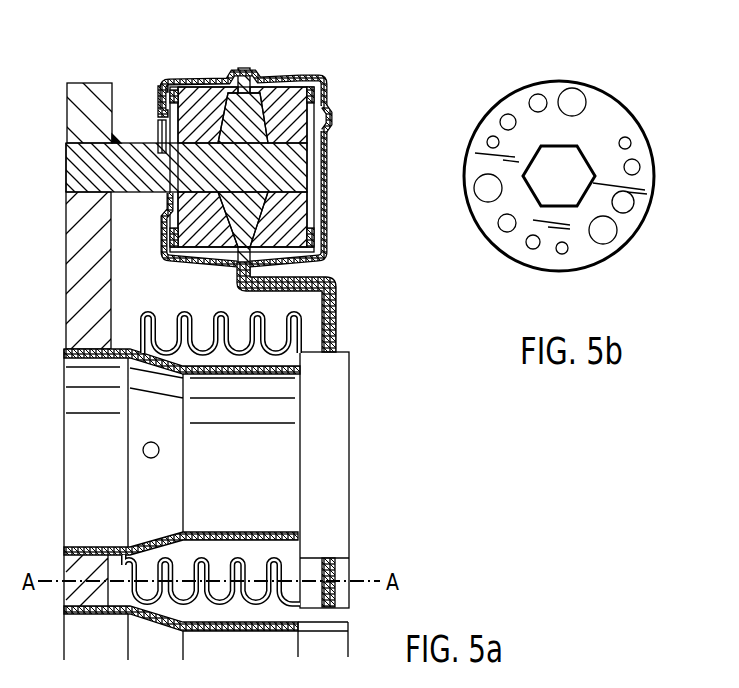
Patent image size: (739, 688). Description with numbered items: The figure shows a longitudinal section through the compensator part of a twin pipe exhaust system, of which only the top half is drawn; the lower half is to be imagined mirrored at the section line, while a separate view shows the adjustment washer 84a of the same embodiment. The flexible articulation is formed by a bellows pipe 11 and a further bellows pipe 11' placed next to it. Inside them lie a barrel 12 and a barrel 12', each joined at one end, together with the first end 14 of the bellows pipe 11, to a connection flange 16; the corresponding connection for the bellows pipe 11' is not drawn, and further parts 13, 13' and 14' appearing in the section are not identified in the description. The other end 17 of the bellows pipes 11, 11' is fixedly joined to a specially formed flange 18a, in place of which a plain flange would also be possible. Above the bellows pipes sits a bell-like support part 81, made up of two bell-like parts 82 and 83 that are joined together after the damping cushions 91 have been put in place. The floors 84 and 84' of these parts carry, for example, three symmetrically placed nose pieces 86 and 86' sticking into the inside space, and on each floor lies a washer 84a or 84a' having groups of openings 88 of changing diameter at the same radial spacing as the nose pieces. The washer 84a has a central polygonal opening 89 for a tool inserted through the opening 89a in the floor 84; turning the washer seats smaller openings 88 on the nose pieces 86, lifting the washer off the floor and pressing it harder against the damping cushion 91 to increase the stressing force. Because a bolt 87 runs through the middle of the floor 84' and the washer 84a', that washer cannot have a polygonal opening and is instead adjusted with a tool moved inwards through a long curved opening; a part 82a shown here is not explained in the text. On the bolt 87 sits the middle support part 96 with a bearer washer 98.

In FIG. 5a, the bellows pipe 11 is at (208, 314).
In FIG. 5a, the further bellows pipe 11' is at (212, 608).
In FIG. 5a, the barrel 12 is at (181, 456).
In FIG. 5a, the barrel 12' is at (238, 650).
In FIG. 5a, the flange 13 is at (56, 448).
In FIG. 5a, the second flange 13' is at (78, 604).
In FIG. 5a, the first end 14 is at (182, 342).
In FIG. 5a, the second ring 14' is at (181, 638).
In FIG. 5a, the connection flange 16 is at (82, 262).
In FIG. 5a, the other end 17 is at (325, 349).
In FIG. 5a, the specially formed flange 18a is at (345, 306).
In FIG. 5a, the bell-like support part 81 is at (282, 62).
In FIG. 5a, the bell-like part 82 is at (160, 92).
In FIG. 5a, the retaining lip 82a is at (158, 114).
In FIG. 5a, the bell-like part 83 is at (315, 82).
In FIG. 5a, the floor 84 is at (269, 169).
In FIG. 5a, the floor 84' is at (80, 100).
In FIG. 5a, the washer 84a is at (274, 241).
In FIG. 5b, the washer 84a is at (563, 192).
In FIG. 5a, the washer 84a' is at (182, 63).
In FIG. 5a, the nose piece 86 is at (347, 124).
In FIG. 5a, the nose piece 86' is at (176, 228).
In FIG. 5a, the bolt 87 is at (78, 177).
In FIG. 5b, the openings 88 is at (542, 98).
In FIG. 5a, the polygonal opening 89 is at (66, 142).
In FIG. 5b, the polygonal opening 89 is at (575, 158).
In FIG. 5a, the opening 89a is at (327, 195).
In FIG. 5a, the damping cushion 91 is at (325, 100).
In FIG. 5a, the middle support part 96 is at (226, 128).
In FIG. 5a, the bearer washer 98 is at (250, 80).